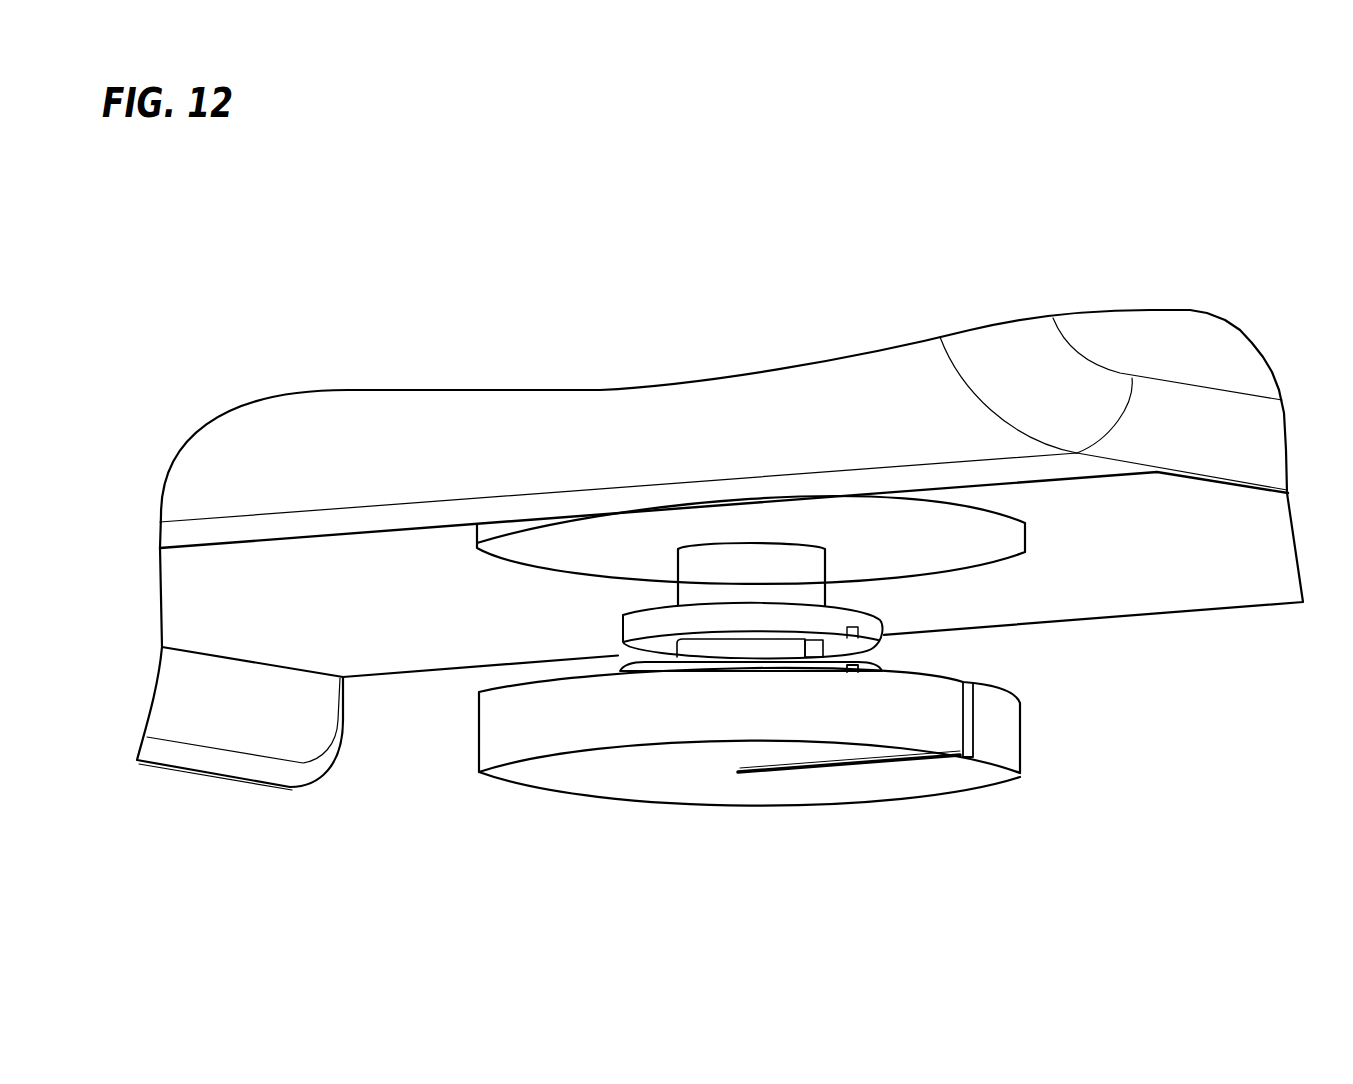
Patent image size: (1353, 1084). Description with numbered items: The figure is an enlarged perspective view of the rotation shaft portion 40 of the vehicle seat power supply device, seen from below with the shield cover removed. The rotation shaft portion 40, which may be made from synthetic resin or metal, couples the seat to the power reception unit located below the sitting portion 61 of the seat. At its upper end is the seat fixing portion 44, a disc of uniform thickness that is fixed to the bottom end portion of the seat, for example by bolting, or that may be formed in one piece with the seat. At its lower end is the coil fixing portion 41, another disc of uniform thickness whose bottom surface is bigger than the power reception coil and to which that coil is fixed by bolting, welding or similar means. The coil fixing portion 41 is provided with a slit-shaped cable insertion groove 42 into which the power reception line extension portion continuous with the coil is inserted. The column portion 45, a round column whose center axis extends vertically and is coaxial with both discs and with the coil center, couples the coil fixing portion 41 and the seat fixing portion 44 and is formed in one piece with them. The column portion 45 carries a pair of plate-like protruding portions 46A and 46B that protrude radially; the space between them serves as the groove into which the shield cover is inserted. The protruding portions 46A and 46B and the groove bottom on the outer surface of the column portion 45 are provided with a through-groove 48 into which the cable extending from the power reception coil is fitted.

The rotation shaft portion 40 is at (962, 265).
The coil fixing portion 41 is at (930, 690).
The cable insertion groove 42 is at (968, 757).
The seat fixing portion 44 is at (768, 507).
The column portion 45 is at (807, 573).
The protruding portion 46A is at (725, 618).
The protruding portion 46B is at (698, 662).
The through-groove 48 is at (810, 650).
The sitting portion 61 is at (1128, 590).